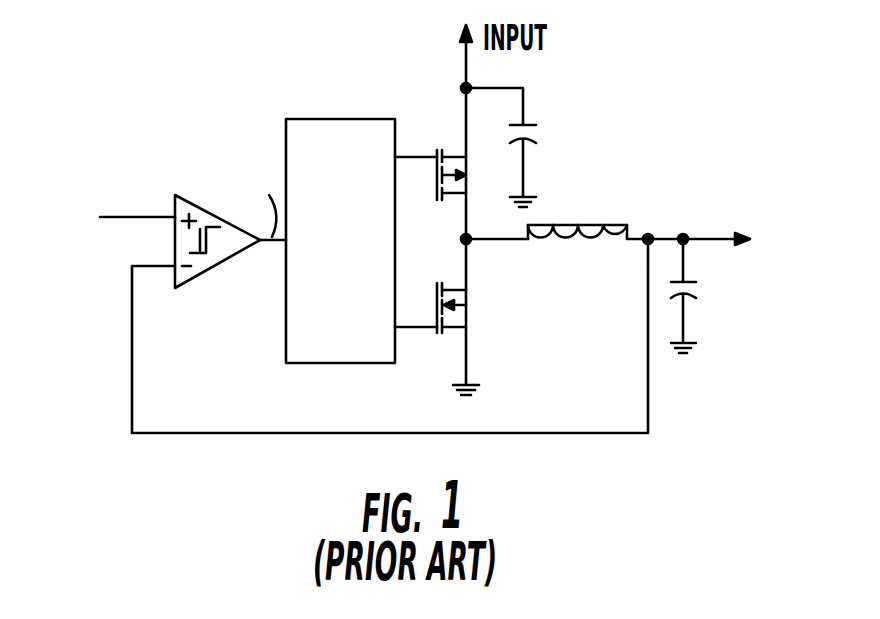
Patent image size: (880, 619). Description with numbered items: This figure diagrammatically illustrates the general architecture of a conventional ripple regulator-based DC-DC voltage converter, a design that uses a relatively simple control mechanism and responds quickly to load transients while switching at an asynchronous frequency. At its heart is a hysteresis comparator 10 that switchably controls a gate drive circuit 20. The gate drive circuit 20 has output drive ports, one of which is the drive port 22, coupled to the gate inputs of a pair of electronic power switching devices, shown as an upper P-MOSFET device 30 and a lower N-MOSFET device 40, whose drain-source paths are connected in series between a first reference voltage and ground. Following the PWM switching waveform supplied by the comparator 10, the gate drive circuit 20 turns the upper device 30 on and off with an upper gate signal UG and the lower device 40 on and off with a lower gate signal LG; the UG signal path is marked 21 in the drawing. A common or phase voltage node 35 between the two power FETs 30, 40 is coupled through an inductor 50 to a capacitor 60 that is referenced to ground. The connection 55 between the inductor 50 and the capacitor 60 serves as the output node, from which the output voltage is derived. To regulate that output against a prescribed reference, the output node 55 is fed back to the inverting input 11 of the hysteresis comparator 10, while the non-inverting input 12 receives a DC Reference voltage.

The hysteresis comparator 10 is at (210, 268).
The inverting input 11 is at (156, 267).
The non-inverting input 12 is at (137, 217).
The gate drive circuit 20 is at (352, 119).
The upper gate (UG) signal 21 is at (395, 150).
The output drive port 22 is at (397, 334).
The upper P-MOSFET device 30 is at (462, 186).
The phase voltage node 35 is at (462, 238).
The lower N-MOSFET device 40 is at (466, 300).
The inductor 50 is at (603, 225).
The output node 55 is at (648, 235).
The capacitor 60 is at (703, 285).